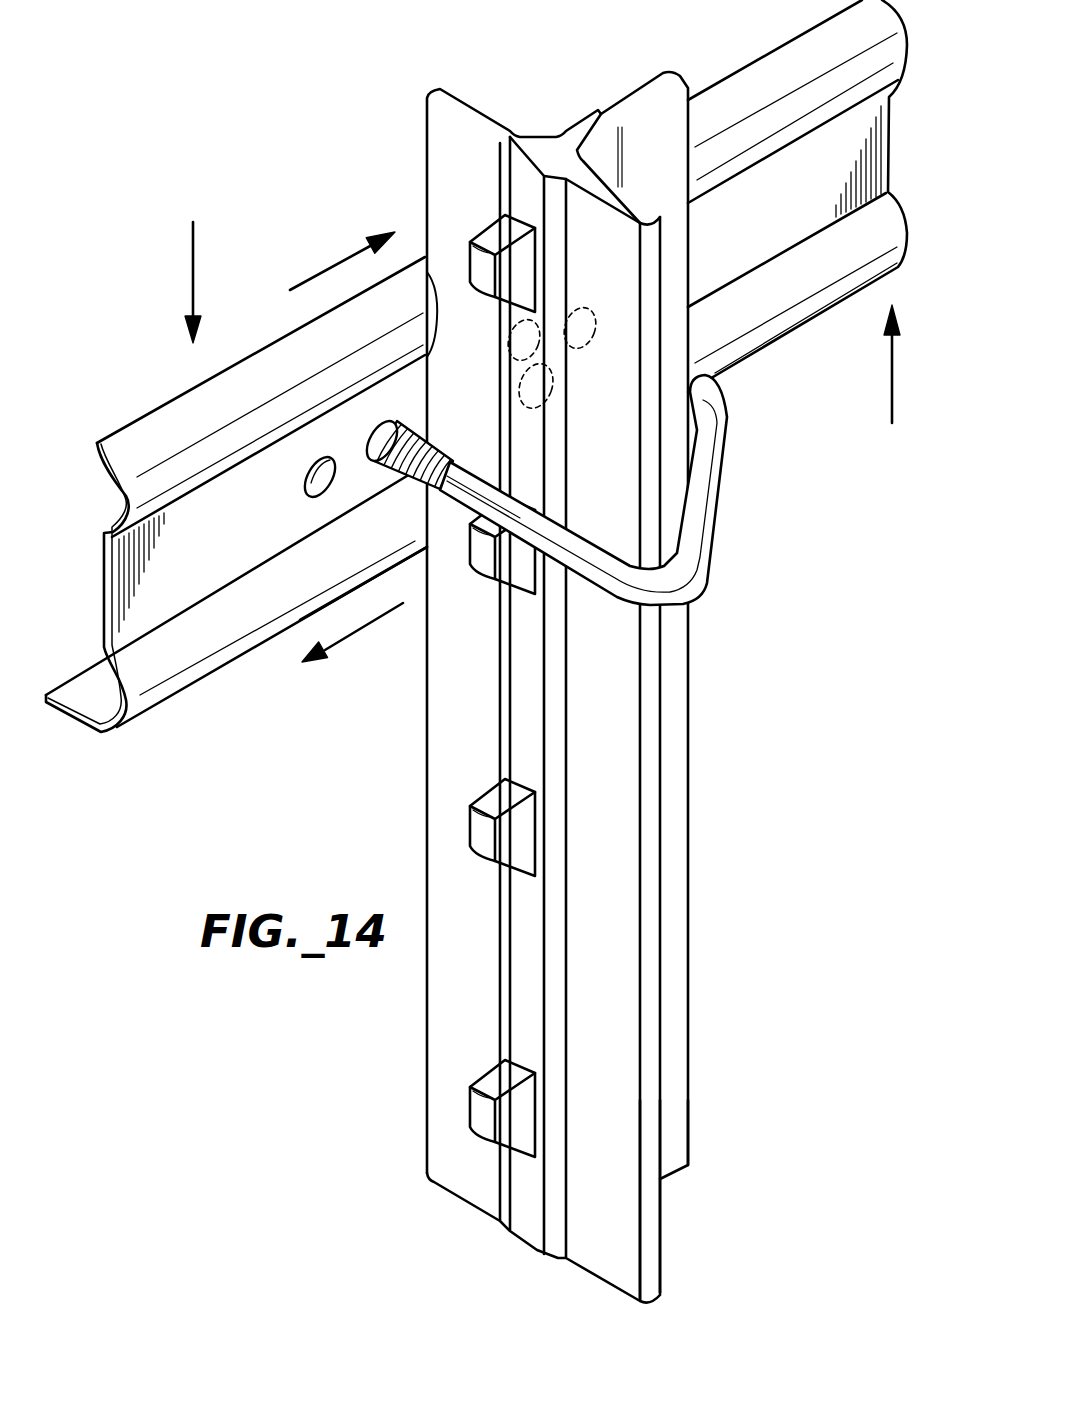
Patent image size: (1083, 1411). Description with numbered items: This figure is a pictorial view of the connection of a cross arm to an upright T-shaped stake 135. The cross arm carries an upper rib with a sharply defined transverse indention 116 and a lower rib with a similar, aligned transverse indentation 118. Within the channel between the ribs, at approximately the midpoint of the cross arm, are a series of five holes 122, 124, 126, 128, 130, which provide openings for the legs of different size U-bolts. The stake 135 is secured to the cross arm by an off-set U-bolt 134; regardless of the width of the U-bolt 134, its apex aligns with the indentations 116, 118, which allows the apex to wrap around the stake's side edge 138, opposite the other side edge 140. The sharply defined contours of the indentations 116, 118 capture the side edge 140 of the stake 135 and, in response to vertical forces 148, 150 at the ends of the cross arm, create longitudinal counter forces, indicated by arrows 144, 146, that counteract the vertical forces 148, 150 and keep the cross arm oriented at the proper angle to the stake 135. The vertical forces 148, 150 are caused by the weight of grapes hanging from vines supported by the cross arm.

The transverse indention 116 is at (430, 334).
The transverse indentation 118 is at (433, 488).
The hole 122 is at (313, 493).
The hole 124 is at (407, 475).
The hole 126 is at (507, 368).
The hole 128 is at (515, 412).
The hole 130 is at (594, 314).
The off-set U-bolt 134 is at (700, 508).
The T-shaped stake 135 is at (629, 1226).
The side edge 138 is at (652, 1190).
The opposite side edge 140 is at (427, 135).
The arrow 144 is at (332, 263).
The arrow 146 is at (357, 633).
The vertical force 148 is at (193, 287).
The vertical force 150 is at (892, 375).